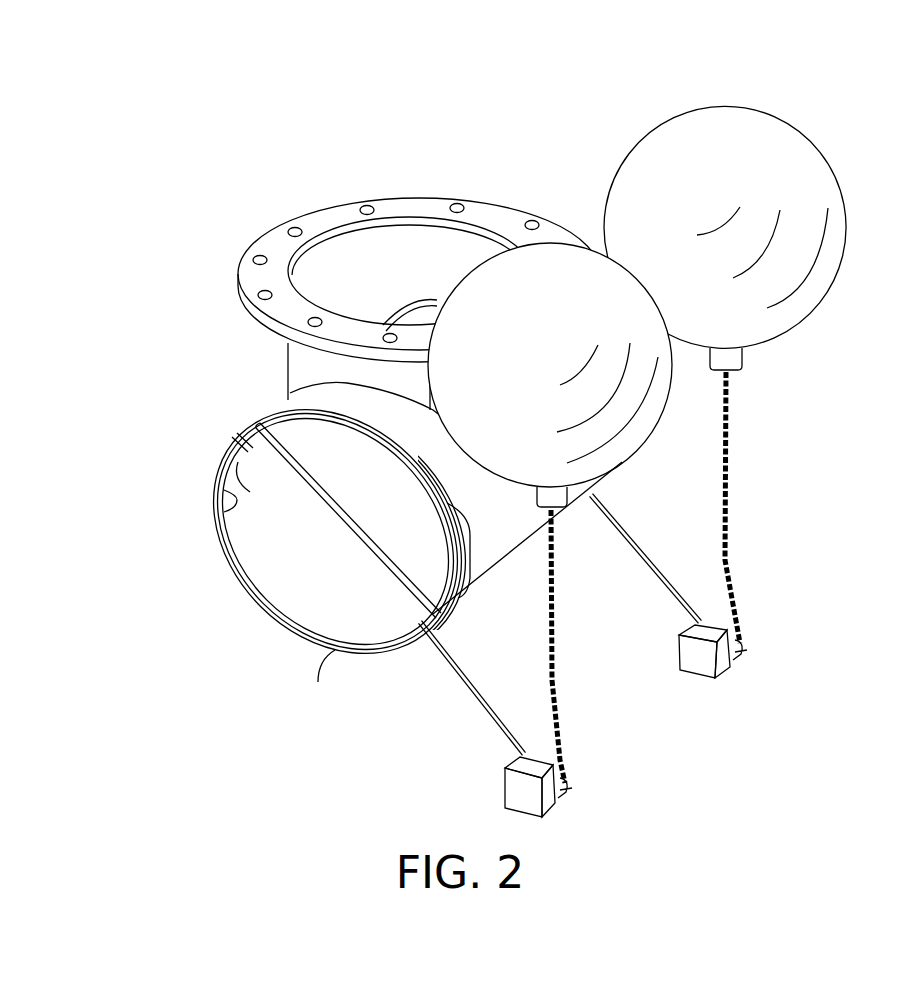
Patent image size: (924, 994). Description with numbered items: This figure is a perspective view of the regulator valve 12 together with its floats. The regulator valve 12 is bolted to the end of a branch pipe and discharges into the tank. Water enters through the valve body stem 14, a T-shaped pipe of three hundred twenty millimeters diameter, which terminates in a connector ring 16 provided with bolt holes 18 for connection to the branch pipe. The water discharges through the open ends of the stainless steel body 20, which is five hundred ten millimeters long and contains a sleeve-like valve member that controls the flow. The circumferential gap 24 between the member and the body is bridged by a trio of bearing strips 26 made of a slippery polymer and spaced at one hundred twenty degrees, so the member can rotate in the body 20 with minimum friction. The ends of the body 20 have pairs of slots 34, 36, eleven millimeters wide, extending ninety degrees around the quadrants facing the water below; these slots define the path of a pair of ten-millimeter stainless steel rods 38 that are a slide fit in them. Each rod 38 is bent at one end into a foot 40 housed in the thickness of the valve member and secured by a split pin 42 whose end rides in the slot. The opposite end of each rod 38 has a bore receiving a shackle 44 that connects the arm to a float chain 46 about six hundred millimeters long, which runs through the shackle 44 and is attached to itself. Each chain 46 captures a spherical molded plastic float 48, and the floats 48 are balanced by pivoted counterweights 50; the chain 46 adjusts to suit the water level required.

The regulator valve 12 is at (200, 180).
The valve body stem 14 is at (302, 362).
The connector ring 16 is at (258, 243).
The bolt holes 18 is at (457, 205).
The body 20 is at (512, 514).
The circumferential gap 24 is at (333, 648).
The bearing strips 26 is at (300, 394).
The slots 34 is at (467, 590).
The slots 36 is at (223, 520).
The rods 38 is at (480, 707).
The foot 40 is at (237, 463).
The split pin 42 is at (235, 445).
The shackle 44 is at (567, 795).
The float chain 46 is at (557, 632).
The float 48 is at (835, 225).
The counterweights 50 is at (540, 818).